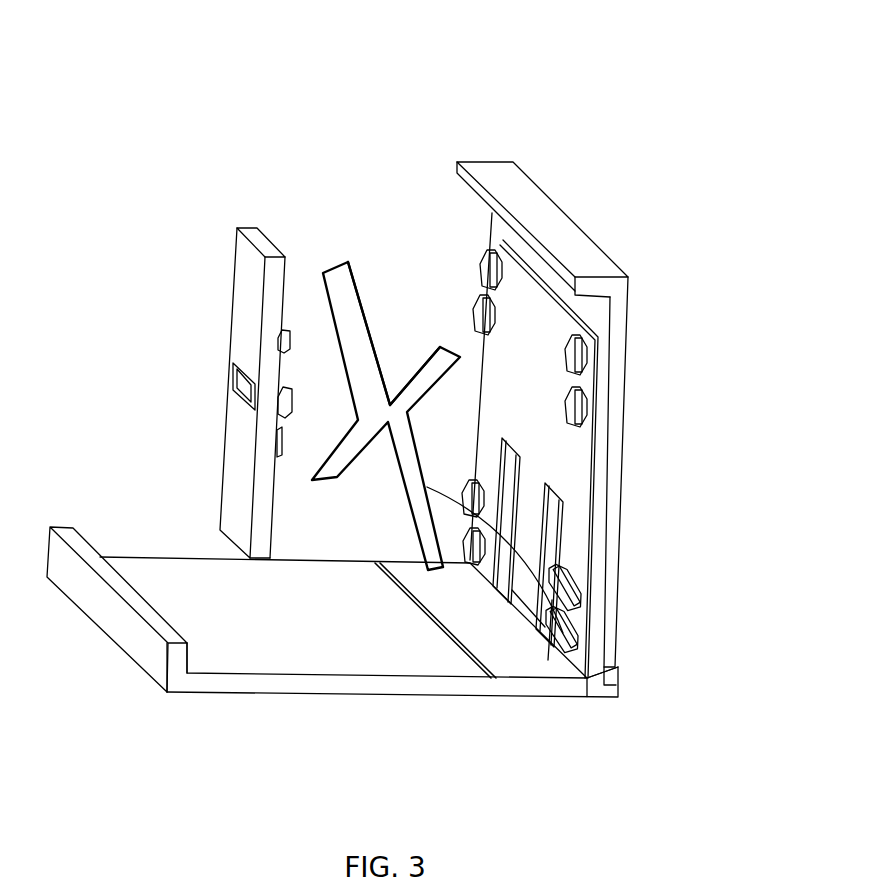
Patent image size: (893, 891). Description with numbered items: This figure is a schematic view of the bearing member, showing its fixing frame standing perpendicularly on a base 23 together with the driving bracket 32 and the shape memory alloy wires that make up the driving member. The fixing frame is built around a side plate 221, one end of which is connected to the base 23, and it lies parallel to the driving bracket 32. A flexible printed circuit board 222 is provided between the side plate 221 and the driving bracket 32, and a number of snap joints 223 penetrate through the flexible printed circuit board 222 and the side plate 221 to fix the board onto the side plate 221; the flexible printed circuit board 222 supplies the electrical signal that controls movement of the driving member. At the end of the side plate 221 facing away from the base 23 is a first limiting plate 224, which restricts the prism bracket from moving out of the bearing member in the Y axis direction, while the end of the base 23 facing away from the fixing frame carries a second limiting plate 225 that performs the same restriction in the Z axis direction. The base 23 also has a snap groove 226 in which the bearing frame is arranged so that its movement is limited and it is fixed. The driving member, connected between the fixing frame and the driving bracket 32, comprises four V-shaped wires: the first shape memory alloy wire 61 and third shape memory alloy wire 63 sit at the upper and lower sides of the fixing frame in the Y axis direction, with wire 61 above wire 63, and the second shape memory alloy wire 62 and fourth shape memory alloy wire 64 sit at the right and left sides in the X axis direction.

The base 23 is at (263, 680).
The second limiting plate 225 is at (72, 538).
The snap groove 226 is at (405, 668).
The driving bracket 32 is at (260, 233).
The first shape memory alloy wire 61 is at (371, 330).
The second shape memory alloy wire 62 is at (332, 278).
The third shape memory alloy wire 63 is at (412, 478).
The fourth shape memory alloy wire 64 is at (552, 600).
The side plate 221 is at (617, 320).
The flexible printed circuit board 222 is at (577, 493).
The snap joints 223 is at (583, 407).
The first limiting plate 224 is at (520, 213).